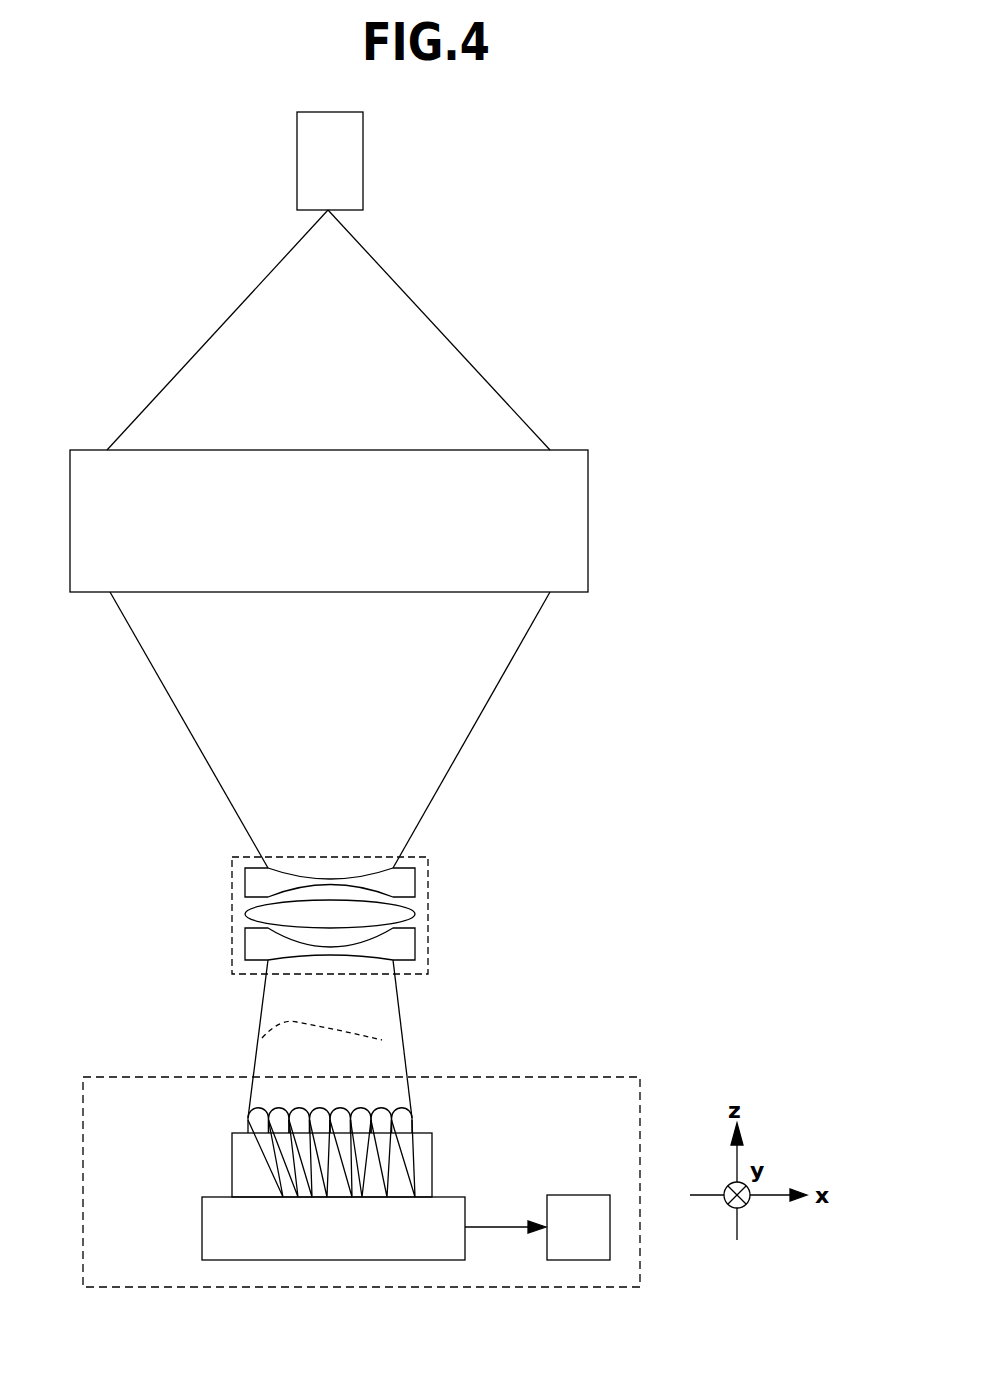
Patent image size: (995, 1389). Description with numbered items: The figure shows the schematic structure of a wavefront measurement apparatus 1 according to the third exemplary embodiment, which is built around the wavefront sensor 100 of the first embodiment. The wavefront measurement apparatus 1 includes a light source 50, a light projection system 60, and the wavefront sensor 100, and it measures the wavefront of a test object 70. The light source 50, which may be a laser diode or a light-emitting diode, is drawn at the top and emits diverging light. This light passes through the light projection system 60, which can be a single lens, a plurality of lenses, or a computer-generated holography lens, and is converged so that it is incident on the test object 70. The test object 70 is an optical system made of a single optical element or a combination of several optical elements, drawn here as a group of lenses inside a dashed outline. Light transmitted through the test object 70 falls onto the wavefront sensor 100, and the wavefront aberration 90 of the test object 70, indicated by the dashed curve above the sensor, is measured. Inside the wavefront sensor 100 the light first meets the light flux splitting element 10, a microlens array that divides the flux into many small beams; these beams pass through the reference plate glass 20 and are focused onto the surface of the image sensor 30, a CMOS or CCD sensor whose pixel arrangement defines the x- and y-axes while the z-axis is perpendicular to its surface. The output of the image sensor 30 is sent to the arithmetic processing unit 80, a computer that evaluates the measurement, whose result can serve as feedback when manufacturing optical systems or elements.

The wavefront measurement apparatus 1 is at (120, 205).
The light flux splitting element 10 is at (247, 1128).
The reference plate glass 20 is at (424, 1166).
The image sensor 30 is at (212, 1229).
The light source 50 is at (351, 161).
The light projection system 60 is at (576, 520).
The test object 70 is at (428, 912).
The arithmetic processing unit 80 is at (578, 1206).
The wavefront aberration 90 is at (386, 1040).
The wavefront sensor 100 is at (143, 1076).